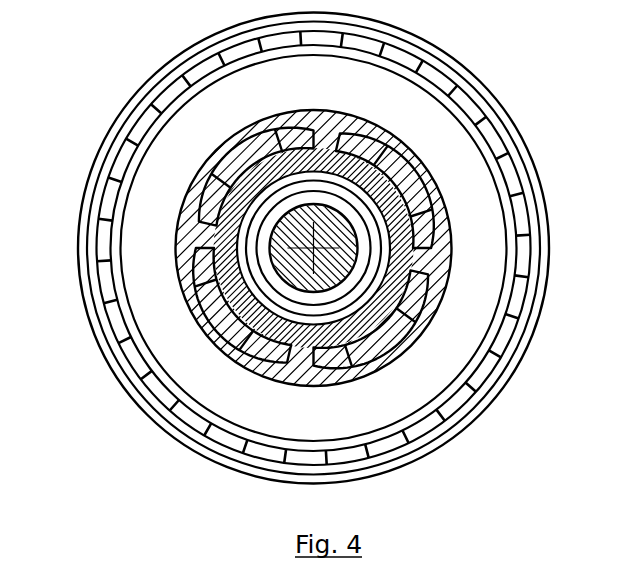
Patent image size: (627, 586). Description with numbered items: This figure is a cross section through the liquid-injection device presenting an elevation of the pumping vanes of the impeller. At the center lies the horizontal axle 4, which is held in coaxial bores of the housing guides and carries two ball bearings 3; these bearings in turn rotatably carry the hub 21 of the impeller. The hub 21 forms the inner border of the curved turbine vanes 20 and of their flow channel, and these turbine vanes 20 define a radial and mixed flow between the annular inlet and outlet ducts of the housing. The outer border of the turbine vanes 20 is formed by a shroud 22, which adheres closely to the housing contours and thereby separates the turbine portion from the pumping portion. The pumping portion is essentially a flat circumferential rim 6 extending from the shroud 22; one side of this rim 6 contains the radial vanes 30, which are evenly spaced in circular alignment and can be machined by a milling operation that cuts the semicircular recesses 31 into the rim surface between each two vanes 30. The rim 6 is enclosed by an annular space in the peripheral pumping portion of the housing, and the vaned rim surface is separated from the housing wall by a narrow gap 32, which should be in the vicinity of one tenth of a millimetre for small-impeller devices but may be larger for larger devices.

The ball bearing 3 is at (306, 176).
The horizontal axle 4 is at (336, 241).
The circumferential rim 6 is at (403, 98).
The turbine vane 20 is at (421, 265).
The hub 21 is at (247, 188).
The shroud 22 is at (242, 142).
The radial vane 30 is at (530, 237).
The semicircular recess 31 is at (493, 137).
The narrow gap 32 is at (503, 310).